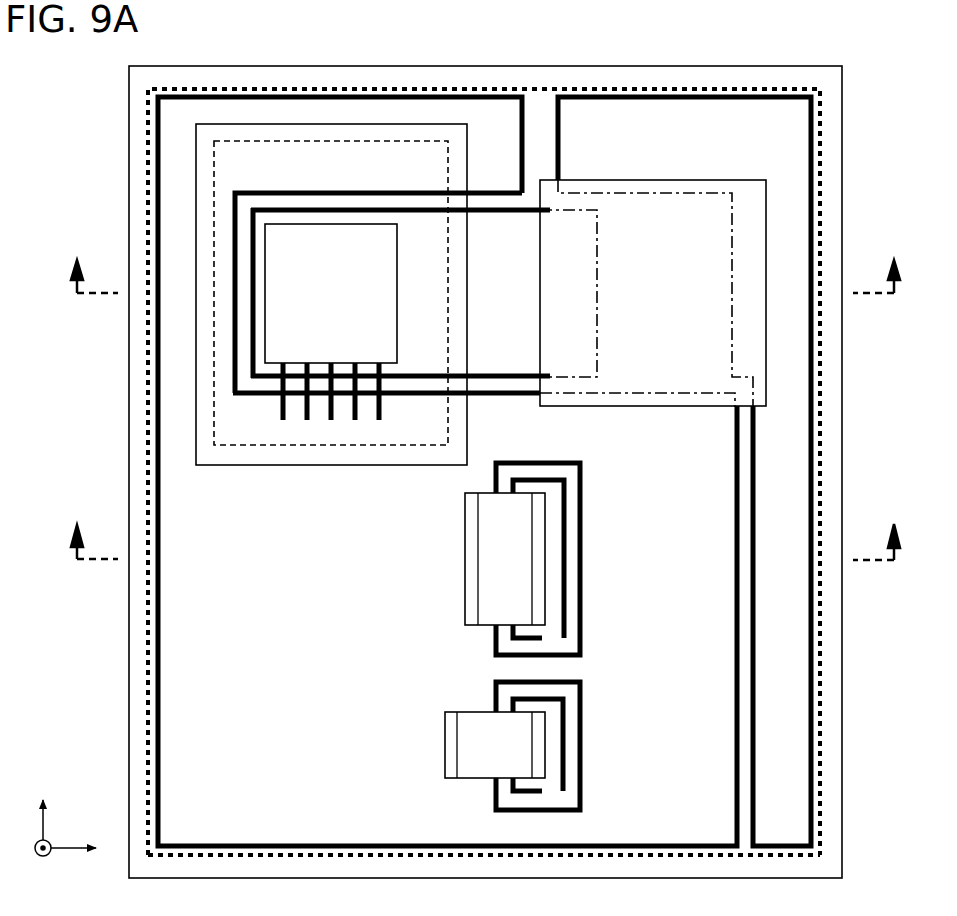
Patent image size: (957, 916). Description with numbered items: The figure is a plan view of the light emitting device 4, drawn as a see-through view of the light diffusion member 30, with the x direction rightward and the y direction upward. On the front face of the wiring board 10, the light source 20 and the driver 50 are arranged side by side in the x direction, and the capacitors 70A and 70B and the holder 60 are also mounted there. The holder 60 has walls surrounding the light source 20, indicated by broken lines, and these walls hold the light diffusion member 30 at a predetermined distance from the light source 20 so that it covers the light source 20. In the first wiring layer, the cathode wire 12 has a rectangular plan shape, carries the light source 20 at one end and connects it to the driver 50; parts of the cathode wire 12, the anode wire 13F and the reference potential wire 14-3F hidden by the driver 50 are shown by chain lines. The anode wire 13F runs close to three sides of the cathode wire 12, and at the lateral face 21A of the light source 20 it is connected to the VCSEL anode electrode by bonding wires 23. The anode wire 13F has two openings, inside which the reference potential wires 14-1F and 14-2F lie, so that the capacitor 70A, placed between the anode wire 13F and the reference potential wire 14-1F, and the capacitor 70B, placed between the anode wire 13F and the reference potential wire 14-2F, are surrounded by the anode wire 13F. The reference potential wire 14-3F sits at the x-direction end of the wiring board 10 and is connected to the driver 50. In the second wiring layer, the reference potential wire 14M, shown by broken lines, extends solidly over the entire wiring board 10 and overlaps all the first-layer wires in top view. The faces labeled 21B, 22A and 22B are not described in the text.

The light emitting device 4 is at (857, 73).
The wiring board 10 is at (128, 740).
The cathode wire 12 is at (528, 207).
The anode wire 13F is at (148, 607).
The reference potential wire 14M is at (613, 856).
The reference potential wire 14-1F is at (566, 553).
The reference potential wire 14-2F is at (565, 745).
The reference potential wire 14-3F is at (778, 847).
The light source 20 is at (264, 279).
The lateral face 21A is at (322, 361).
The first wiring 21B is at (318, 224).
The second wiring left portion 22A is at (263, 325).
The second wiring 22B is at (397, 273).
The bonding wires 23 is at (283, 385).
The light diffusion member 30 is at (330, 155).
The driver 50 is at (678, 180).
The holder 60 is at (203, 180).
The capacitor 70A is at (465, 563).
The capacitor 70B is at (445, 747).